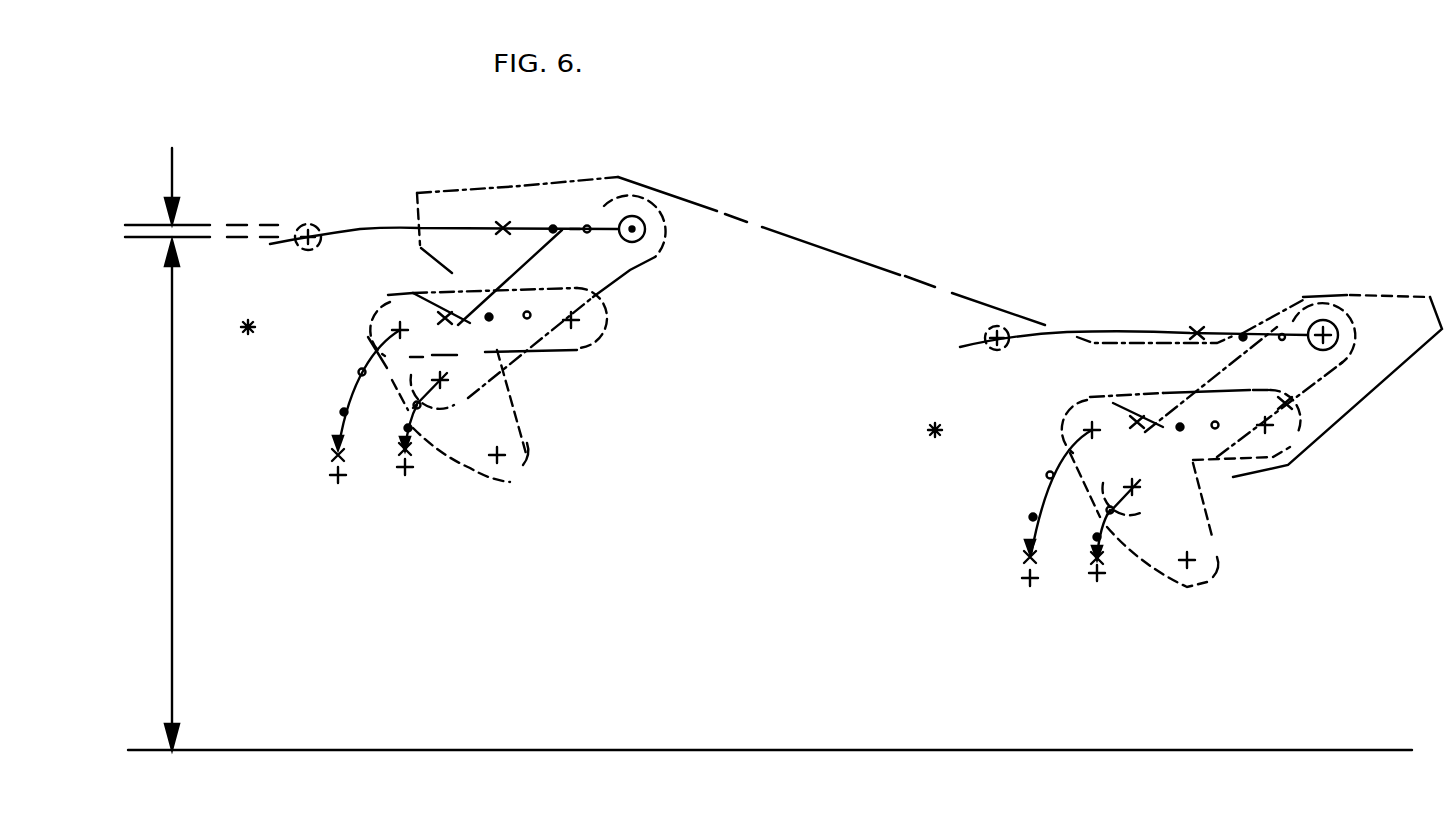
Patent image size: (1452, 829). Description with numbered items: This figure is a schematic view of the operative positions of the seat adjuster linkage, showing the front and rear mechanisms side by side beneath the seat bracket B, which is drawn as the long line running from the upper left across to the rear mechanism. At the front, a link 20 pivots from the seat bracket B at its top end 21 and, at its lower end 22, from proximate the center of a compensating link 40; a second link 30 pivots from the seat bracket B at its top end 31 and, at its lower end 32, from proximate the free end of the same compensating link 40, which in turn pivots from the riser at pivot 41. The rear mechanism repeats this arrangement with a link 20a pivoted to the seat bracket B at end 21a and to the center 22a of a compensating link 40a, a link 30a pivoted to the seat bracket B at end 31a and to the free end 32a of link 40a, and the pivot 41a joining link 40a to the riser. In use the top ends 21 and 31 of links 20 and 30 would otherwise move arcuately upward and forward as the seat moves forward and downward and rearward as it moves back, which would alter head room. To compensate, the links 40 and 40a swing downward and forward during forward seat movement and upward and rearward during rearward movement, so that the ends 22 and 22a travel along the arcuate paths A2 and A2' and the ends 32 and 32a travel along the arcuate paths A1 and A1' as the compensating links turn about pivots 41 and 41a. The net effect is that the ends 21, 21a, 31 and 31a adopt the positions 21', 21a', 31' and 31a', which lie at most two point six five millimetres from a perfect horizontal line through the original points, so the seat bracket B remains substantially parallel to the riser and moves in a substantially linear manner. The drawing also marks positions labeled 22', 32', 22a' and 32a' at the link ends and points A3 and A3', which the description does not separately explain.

The link 20 is at (630, 270).
The pivot of link 20 on seat bracket 21 is at (665, 234).
The end of link 20 at center of link 40 22 is at (438, 421).
The link 30 is at (585, 350).
The pivot of link 30 on seat bracket 31 is at (516, 293).
The end of link 30 at free end of link 40 32 is at (369, 387).
The compensating link 40 is at (490, 482).
The pivot of compensating link 40 41 is at (500, 457).
The compensated position of end 21 21' is at (444, 220).
The compensated position of end 31 31' is at (268, 338).
The link end in initial position 32' is at (335, 509).
The link end in initial position 22' is at (431, 502).
The link 20a is at (1343, 362).
The pivot of link 20a on seat bracket 21a is at (1357, 335).
The end of link 20a at center of link 40a 22a is at (1132, 514).
The link 30a is at (1290, 447).
The pivot of link 30a on seat bracket 31a is at (1245, 393).
The end of link 30a at free end of link 40a 32a is at (1062, 477).
The compensating link 40a is at (1197, 585).
The pivot of compensating link 40a 41a is at (1192, 558).
The compensated position of end 21a 21a' is at (1134, 310).
The compensated position of end 31a 31a' is at (965, 441).
The second unit link end in initial position 32a' is at (986, 569).
The second unit link end in initial position 22a' is at (1109, 599).
The seat bracket B is at (805, 238).
The arcuate path A1 is at (298, 481).
The arcuate path A2 is at (388, 494).
The point A3 is at (280, 211).
The arcuate path A1' is at (1036, 623).
The arcuate path A2' is at (1106, 633).
The point A3' is at (996, 377).